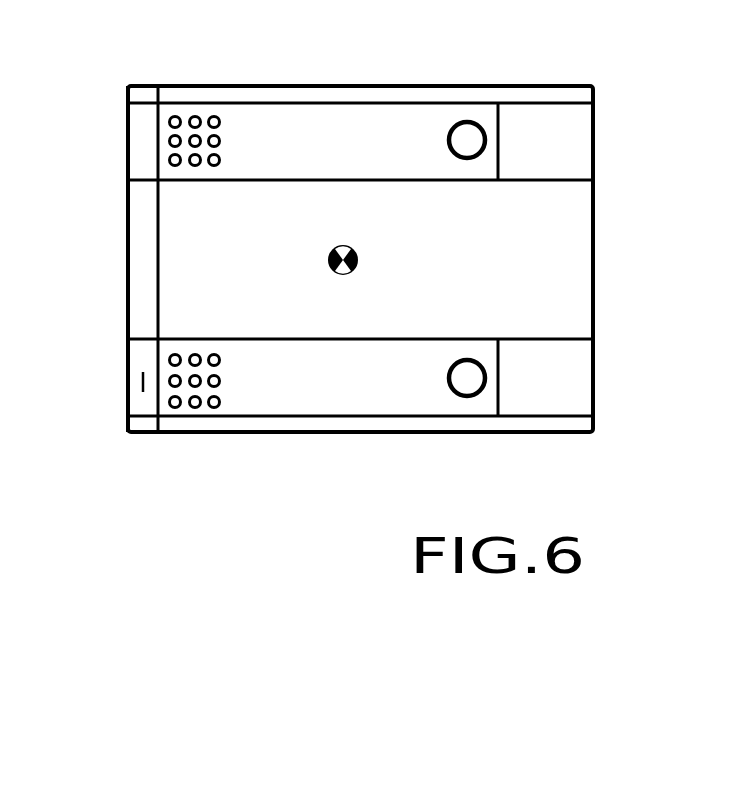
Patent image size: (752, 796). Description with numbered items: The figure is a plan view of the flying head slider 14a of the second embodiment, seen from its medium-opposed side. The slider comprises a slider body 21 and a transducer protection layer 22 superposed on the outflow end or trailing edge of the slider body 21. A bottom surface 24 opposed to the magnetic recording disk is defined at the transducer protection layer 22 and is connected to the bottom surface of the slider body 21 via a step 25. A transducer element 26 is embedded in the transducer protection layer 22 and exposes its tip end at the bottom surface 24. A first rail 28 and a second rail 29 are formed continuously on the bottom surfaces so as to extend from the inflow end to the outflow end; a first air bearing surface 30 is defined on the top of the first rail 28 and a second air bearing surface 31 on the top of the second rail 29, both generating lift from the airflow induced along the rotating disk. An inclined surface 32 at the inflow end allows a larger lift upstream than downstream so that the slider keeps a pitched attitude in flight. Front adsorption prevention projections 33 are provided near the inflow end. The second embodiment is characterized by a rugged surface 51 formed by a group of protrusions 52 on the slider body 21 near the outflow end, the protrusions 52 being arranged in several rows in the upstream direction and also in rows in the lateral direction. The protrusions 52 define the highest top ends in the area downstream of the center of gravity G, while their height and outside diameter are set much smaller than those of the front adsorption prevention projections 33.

The flying head slider 14a is at (424, 82).
The slider body 21 is at (233, 86).
The transducer protection layer 22 is at (138, 85).
The bottom surface 24 is at (139, 260).
The step 25 is at (159, 235).
The transducer element 26 is at (143, 382).
The first rail 28 is at (345, 416).
The second rail 29 is at (321, 100).
The first air bearing surface 30 is at (351, 352).
The second air bearing surface 31 is at (284, 162).
The inclined surface 32 is at (580, 115).
The front adsorption prevention projections 33 is at (449, 140).
The rugged surface 51 is at (152, 133).
The protrusions 52 is at (220, 121).
The center of gravity G is at (360, 256).